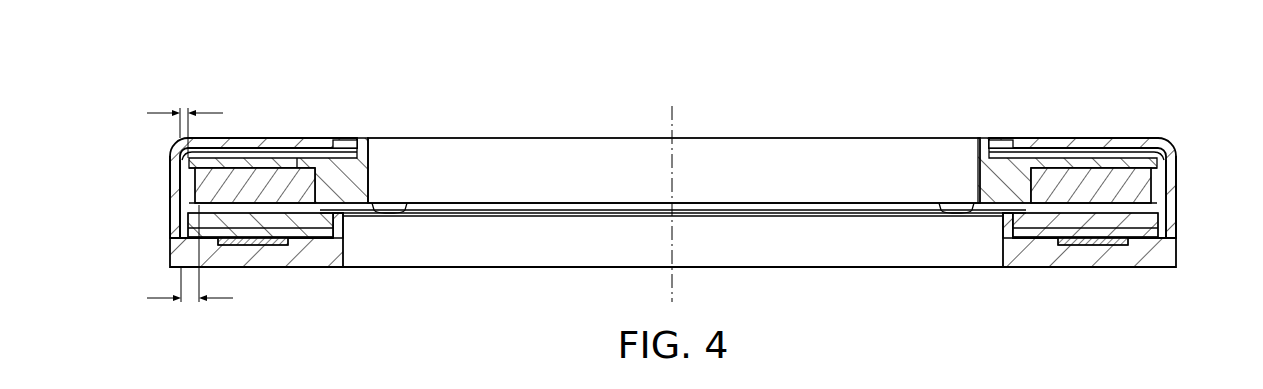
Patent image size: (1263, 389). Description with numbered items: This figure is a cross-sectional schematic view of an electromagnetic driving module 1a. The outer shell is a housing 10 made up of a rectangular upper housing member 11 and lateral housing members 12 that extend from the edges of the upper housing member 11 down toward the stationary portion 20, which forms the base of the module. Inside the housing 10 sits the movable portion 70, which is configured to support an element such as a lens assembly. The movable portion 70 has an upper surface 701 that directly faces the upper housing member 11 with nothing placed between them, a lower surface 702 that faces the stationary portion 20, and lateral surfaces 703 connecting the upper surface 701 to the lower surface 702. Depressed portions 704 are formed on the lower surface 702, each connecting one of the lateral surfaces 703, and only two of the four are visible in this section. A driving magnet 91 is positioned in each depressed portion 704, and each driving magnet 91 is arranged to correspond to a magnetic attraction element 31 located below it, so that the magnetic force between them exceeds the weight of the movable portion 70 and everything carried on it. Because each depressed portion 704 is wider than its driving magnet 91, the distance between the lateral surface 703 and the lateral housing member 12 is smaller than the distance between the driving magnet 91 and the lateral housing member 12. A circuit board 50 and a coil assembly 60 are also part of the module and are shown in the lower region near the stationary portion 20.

The camera module 1a is at (143, 72).
The housing 10 is at (673, 158).
The upper housing member 11 is at (247, 145).
The lateral housing member 12 is at (178, 226).
The stationary portion 20 is at (1050, 252).
The magnetic attraction element 31 is at (1098, 246).
The circuit board 50 is at (718, 273).
The coil assembly 60 is at (1147, 230).
The movable portion 70 is at (623, 207).
The upper surface 701 is at (322, 154).
The lower surface 702 is at (318, 215).
The lateral surface 703 is at (192, 165).
The depressed portion 704 is at (297, 154).
The driving magnet 91 is at (205, 192).